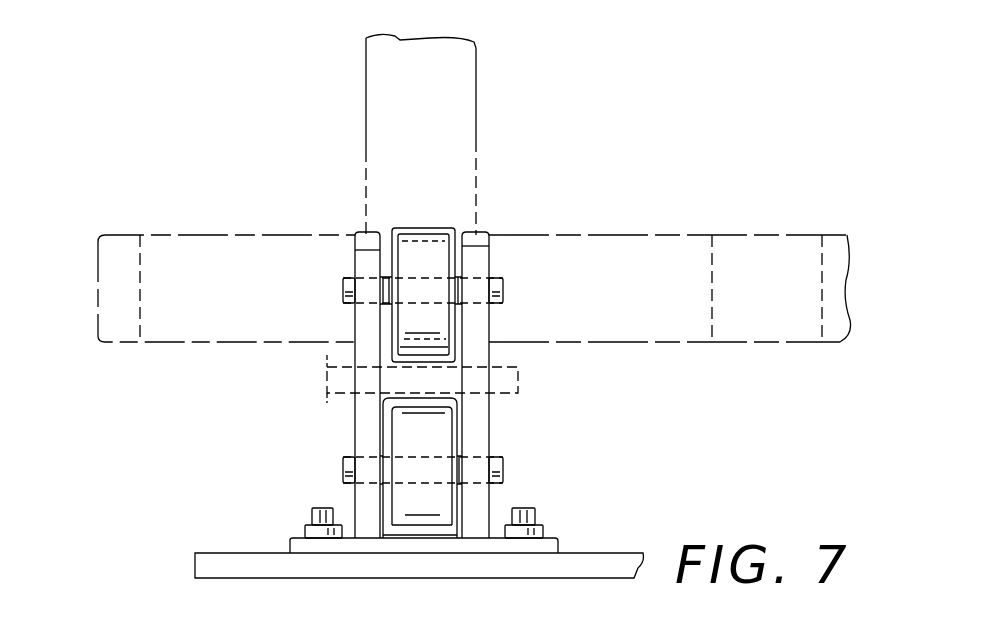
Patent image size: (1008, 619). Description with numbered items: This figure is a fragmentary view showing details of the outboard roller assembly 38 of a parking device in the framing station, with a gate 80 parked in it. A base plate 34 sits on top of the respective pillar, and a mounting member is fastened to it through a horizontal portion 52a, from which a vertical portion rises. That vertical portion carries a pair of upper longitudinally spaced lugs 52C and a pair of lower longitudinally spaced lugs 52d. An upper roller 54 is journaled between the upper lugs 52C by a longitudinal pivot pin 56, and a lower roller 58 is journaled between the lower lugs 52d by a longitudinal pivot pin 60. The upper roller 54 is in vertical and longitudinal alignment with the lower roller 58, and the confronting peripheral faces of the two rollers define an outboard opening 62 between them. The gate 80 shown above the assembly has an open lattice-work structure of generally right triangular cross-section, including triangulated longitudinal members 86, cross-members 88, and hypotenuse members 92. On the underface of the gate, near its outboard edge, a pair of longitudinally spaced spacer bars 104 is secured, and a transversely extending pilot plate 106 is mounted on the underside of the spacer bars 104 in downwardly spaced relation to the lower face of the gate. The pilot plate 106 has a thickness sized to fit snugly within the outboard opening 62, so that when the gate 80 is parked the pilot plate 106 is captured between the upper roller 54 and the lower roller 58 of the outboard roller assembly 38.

The base plate 34 is at (197, 566).
The outboard roller assembly 38 is at (545, 360).
The horizontal portion 52a is at (290, 545).
The upper lugs 52C is at (355, 250).
The lower lugs 52d is at (490, 428).
The upper roller 54 is at (424, 238).
The longitudinal pivot pin 56 is at (503, 290).
The lower roller 58 is at (440, 500).
The longitudinal pivot pin 60 is at (343, 466).
The outboard opening 62 is at (461, 377).
The gate 80 is at (260, 225).
The longitudinal members 86 is at (172, 232).
The cross-members 88 is at (137, 288).
The hypotenuse members 92 is at (470, 80).
The spacer bars 104 is at (330, 353).
The pilot plate 106 is at (340, 395).